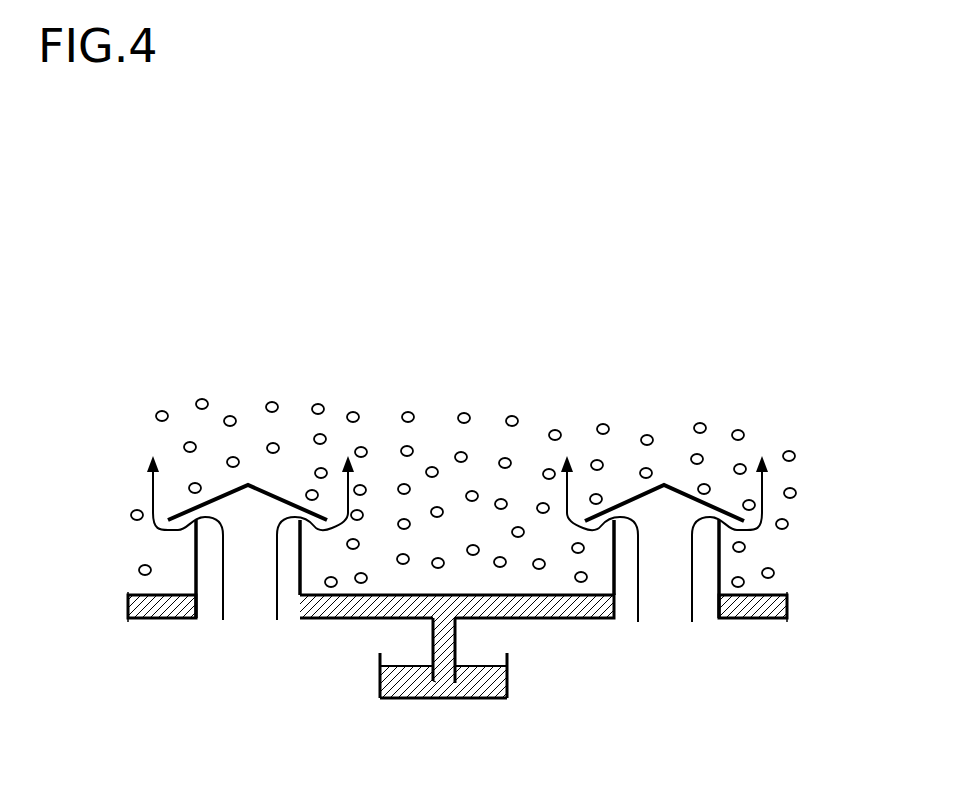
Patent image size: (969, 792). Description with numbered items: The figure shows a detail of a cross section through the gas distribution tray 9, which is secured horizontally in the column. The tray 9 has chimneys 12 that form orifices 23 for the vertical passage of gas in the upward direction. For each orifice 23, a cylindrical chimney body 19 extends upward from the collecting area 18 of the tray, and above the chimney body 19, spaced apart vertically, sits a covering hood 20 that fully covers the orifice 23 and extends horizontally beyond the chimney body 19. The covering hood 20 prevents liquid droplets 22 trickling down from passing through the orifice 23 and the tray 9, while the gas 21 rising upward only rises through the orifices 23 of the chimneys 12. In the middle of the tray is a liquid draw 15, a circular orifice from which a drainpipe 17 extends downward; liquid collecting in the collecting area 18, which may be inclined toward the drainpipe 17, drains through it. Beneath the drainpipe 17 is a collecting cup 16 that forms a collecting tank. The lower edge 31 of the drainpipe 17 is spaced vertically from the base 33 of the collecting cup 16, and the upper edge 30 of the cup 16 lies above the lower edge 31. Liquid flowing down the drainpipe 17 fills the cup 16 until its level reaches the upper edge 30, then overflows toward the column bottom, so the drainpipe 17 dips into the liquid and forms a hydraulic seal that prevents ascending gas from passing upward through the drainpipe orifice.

The gas distribution tray 9 is at (117, 623).
The chimney 12 is at (281, 478).
The liquid draw 15 is at (433, 700).
The collecting cup 16 is at (508, 683).
The drainpipe 17 is at (456, 645).
The collecting area 18 is at (765, 620).
The chimney body 19 is at (196, 553).
The covering hood 20 is at (222, 496).
The gas 21 is at (217, 600).
The liquid droplets 22 is at (230, 415).
The orifice 23 is at (287, 607).
The upper edge of the collecting cup 30 is at (379, 653).
The lower edge of the drainpipe 31 is at (430, 683).
The base of the collecting cup 33 is at (458, 699).